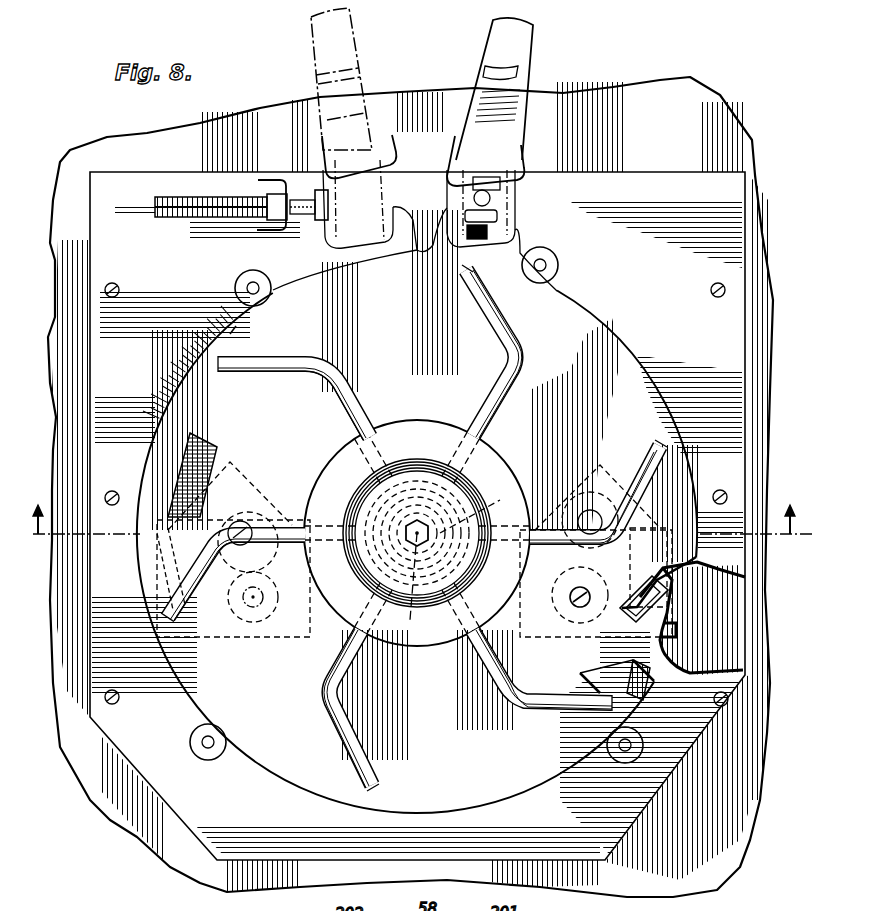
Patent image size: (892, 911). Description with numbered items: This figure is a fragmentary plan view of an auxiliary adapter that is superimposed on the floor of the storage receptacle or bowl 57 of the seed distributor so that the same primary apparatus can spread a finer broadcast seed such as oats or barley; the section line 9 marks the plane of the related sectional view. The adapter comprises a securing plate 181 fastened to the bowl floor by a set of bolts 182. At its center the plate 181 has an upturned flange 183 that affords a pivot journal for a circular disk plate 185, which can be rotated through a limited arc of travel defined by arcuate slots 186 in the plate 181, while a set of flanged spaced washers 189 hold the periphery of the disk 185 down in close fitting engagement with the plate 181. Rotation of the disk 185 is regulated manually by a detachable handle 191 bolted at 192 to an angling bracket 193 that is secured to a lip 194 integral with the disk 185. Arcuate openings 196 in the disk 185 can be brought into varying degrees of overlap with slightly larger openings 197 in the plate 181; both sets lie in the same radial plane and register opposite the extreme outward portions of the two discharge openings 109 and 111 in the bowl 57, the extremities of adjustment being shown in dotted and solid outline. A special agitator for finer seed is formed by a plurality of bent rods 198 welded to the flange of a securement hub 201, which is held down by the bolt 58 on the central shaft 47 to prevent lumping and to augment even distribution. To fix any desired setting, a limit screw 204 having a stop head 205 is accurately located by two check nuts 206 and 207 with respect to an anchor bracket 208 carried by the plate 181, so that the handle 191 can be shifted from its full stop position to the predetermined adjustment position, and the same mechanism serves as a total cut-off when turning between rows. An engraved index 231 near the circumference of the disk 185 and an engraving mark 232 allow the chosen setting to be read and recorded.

The section line 9- 9 is at (421, 544).
The shaft 47 is at (410, 515).
The storage receptacle or bowl 57 is at (680, 92).
The bolt 58 is at (420, 540).
The discharge opening 109 is at (667, 630).
The discharge opening 111 is at (290, 615).
The securing plate 181 is at (722, 178).
The bolts 182 is at (120, 288).
The upturned flange 183 is at (490, 510).
The circular disk plate 185 is at (610, 343).
The arcuate slots 186 is at (252, 556).
The flanged spaced washers 189 is at (236, 283).
The detachable handle 191 is at (495, 48).
The bolt 192 is at (490, 198).
The angling bracket 193 is at (452, 150).
The lip 194 is at (330, 244).
The arcuate openings 196 is at (200, 445).
The openings 197 is at (208, 600).
The bent rods 198 is at (323, 364).
The securement hub 201 is at (360, 490).
The limit screw 204 is at (172, 195).
The stop head 205 is at (329, 203).
The check nut 206 is at (275, 193).
The check nut 207 is at (300, 199).
The anchor bracket 208 is at (257, 230).
The engraved index 231 is at (170, 360).
The engraving mark 232 is at (232, 331).